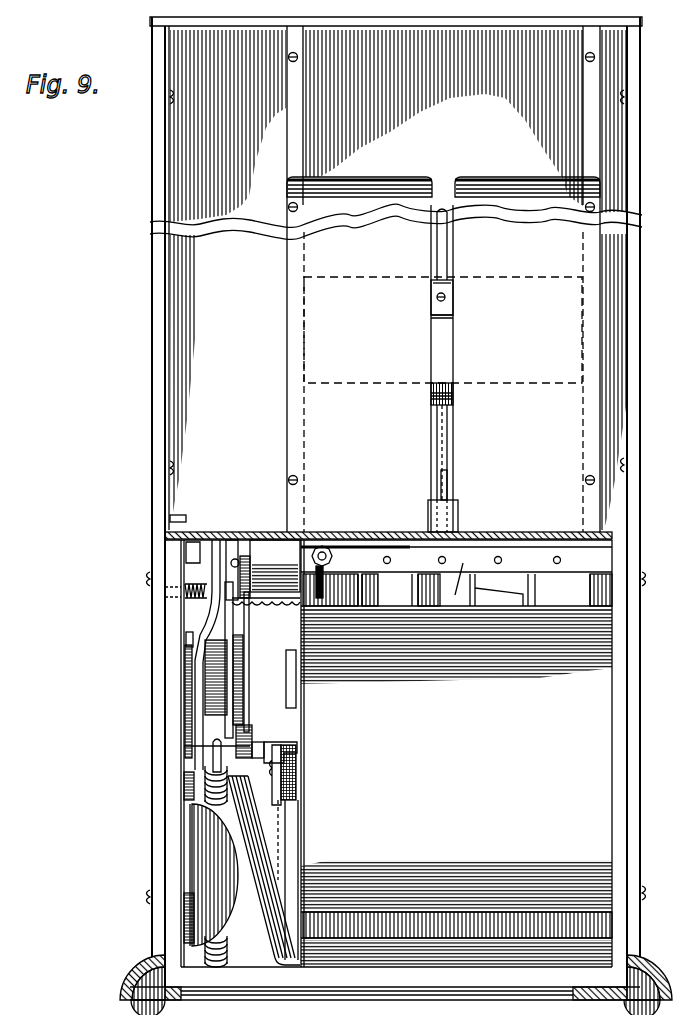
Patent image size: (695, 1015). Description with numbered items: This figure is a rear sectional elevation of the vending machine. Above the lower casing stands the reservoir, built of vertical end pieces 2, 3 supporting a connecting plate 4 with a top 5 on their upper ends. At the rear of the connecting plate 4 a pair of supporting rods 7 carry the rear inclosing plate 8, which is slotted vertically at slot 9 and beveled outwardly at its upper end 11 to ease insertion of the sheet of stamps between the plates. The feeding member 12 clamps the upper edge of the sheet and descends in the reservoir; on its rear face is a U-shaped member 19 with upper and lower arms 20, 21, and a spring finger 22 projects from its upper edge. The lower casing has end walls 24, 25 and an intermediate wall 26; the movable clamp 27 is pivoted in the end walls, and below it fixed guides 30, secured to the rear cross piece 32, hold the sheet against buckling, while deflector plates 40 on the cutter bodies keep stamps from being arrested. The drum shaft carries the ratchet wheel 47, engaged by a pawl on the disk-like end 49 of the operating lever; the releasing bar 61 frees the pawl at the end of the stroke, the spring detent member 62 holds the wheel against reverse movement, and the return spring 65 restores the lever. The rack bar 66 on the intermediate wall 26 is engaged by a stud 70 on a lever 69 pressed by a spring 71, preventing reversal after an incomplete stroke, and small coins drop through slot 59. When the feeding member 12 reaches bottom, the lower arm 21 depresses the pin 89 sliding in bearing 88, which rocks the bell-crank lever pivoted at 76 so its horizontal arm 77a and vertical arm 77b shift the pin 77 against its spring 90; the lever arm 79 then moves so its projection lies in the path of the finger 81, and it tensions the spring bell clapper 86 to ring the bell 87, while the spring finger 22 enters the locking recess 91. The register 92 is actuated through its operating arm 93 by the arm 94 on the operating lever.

The vertical end piece 2 is at (637, 316).
The vertical end piece 3 is at (153, 328).
The connecting plate 4 is at (398, 167).
The top 5 is at (642, 19).
The supporting rods 7 is at (297, 127).
The rear inclosing plate 8 is at (313, 410).
The slot 9 is at (453, 448).
The beveled upper end 11 is at (388, 182).
The feeding member 12 is at (380, 383).
The U-shaped member 19 is at (450, 287).
The upper arm 20 is at (430, 279).
The lower arm 21 is at (453, 320).
The spring finger 22 is at (443, 242).
The end wall 24 is at (618, 838).
The end wall 25 is at (170, 915).
The intermediate wall 26 is at (302, 815).
The movable clamp 27 is at (497, 545).
The fixed guides 30 is at (485, 590).
The rear cross piece 32 is at (446, 586).
The deflector plate 40 is at (499, 589).
The ratchet wheel 47 is at (237, 692).
The disk-like end 49 is at (248, 650).
The slot 59 is at (302, 702).
The releasing bar 61 is at (236, 916).
The spring detent member 62 is at (235, 637).
The return spring 65 is at (208, 786).
The rack bar 66 is at (279, 804).
The lever 69 is at (260, 742).
The stud 70 is at (273, 748).
The spring 71 is at (296, 788).
The pivot 76 is at (323, 547).
The pin 77 is at (456, 578).
The horizontal arm 77a is at (483, 560).
The vertical arm 77b is at (363, 559).
The lever arm 79 is at (196, 663).
The finger 81 is at (184, 640).
The spring bell clapper 86 is at (183, 775).
The bell 87 is at (190, 840).
The vertical bearing 88 is at (430, 513).
The pin 89 is at (448, 488).
The spring 90 is at (183, 600).
The locking recess 91 is at (453, 401).
The register 92 is at (267, 545).
The operating arm 93 is at (233, 540).
The arm 94 is at (237, 744).